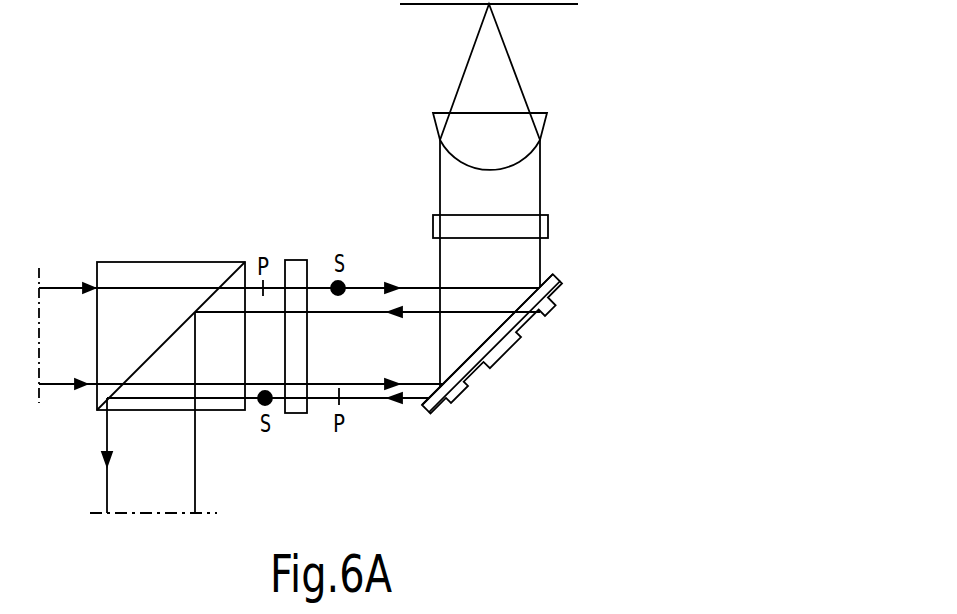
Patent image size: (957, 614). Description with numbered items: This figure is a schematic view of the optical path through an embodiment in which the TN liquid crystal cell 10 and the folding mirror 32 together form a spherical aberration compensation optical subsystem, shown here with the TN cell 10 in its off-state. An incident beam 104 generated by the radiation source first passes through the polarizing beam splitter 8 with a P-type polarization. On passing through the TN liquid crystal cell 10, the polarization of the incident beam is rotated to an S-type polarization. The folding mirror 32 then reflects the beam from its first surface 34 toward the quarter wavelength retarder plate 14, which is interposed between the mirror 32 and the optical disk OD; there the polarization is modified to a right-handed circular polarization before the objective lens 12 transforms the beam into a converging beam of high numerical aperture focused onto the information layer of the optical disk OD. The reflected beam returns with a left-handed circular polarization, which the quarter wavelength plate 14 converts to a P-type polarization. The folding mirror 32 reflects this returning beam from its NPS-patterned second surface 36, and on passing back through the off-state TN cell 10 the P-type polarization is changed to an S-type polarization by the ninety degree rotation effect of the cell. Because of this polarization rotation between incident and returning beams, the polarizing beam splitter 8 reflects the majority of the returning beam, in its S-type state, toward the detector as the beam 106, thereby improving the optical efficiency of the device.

The optical disk OD is at (428, 6).
The polarizing beam splitter 8 is at (170, 262).
The TN liquid crystal cell 10 is at (296, 260).
The objective lens 12 is at (434, 127).
The quarter wavelength retarder plate 14 is at (433, 225).
The folding mirror 32 is at (557, 276).
The first surface 34 is at (487, 340).
The NPS-patterned second surface 36 is at (501, 347).
The incident beam 104 is at (60, 288).
The reflected beam toward detector 106 is at (107, 485).